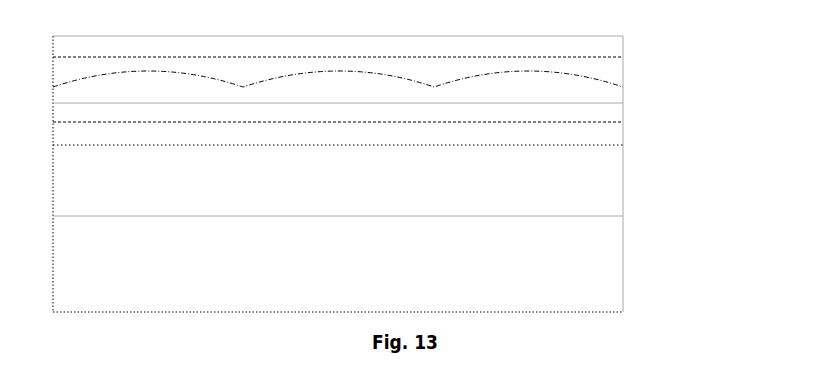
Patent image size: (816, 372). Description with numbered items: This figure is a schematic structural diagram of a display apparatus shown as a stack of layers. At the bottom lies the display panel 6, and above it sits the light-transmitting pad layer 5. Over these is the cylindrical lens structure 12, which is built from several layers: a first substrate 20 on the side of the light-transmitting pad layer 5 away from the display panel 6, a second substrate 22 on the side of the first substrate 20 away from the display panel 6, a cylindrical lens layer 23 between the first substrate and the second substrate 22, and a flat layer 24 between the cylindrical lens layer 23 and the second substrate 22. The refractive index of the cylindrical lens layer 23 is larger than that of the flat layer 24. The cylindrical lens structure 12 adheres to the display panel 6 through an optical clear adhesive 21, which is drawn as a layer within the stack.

The cylindrical lens structure 12 is at (397, 81).
The second substrate 22 is at (613, 47).
The flat layer 24 is at (612, 65).
The cylindrical lens layer 23 is at (610, 94).
The optical clear adhesive 21 is at (370, 115).
The first substrate 20 is at (612, 137).
The light-transmitting pad layer 5 is at (605, 178).
The display panel 6 is at (602, 264).